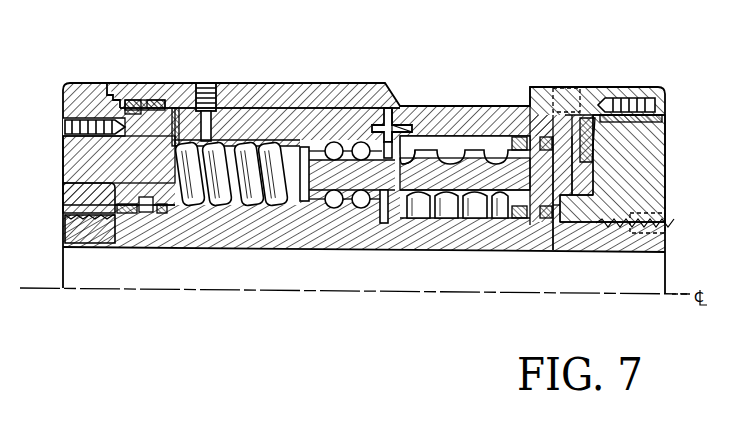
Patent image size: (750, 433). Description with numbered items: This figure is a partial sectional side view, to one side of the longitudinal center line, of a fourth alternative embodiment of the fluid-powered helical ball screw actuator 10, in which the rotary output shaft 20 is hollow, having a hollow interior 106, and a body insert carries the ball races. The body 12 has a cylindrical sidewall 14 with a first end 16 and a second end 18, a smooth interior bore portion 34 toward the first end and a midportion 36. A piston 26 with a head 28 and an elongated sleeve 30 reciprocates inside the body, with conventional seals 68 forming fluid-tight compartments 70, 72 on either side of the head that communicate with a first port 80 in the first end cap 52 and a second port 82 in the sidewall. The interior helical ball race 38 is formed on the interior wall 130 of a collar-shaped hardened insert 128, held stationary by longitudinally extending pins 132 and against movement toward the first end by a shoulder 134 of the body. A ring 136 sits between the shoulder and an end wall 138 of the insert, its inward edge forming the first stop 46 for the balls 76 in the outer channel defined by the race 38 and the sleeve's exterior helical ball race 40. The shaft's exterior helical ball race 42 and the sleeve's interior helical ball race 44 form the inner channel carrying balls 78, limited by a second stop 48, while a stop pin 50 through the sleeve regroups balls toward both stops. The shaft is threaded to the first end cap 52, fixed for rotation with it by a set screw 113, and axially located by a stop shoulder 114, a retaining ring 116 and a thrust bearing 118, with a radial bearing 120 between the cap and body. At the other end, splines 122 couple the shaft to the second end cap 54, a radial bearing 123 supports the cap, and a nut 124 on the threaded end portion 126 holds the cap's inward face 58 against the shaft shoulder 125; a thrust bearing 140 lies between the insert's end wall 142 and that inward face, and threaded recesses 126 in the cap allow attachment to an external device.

The fluid-powered helical ball screw actuator 10 is at (505, 31).
The body 12 is at (352, 83).
The cylindrical sidewall 14 is at (318, 140).
The first end 16 is at (652, 87).
The second end 18 is at (112, 84).
The rotary output shaft 20 is at (302, 202).
The piston 26 is at (535, 106).
The head 28 is at (556, 110).
The sleeve 30 is at (430, 150).
The smooth interior bore portion 34 is at (468, 170).
The midportion 36 is at (240, 141).
The interior helical ball race 38 is at (205, 207).
The exterior helical ball race 40 is at (456, 136).
The exterior helical ball race 42 is at (238, 207).
The interior helical ball race 44 is at (470, 220).
The first stop 46 is at (386, 142).
The second stop 48 is at (384, 224).
The stop pin 50 is at (334, 205).
The first end cap 52 is at (655, 165).
The second end cap 54 is at (72, 152).
The inward face 58 is at (145, 213).
The seals 68 is at (142, 102).
The compartment 70 is at (640, 222).
The compartment 72 is at (520, 137).
The balls 76 is at (283, 140).
The balls 78 is at (360, 208).
The first port 80 is at (596, 98).
The second port 82 is at (204, 84).
The hollow interior 106 is at (70, 272).
The set screw 113 is at (662, 232).
The stop shoulder 114 is at (553, 226).
The retaining ring 116 is at (578, 226).
The thrust bearing 118 is at (575, 170).
The radial bearing 120 is at (660, 116).
The splines 122 is at (125, 214).
The radial bearing 123 is at (152, 100).
The nut 124 is at (78, 197).
The shoulder 125 is at (175, 146).
The end portion / threaded recesses 126 is at (68, 128).
The hardened insert 128 is at (273, 98).
The interior wall 130 is at (212, 140).
The pins 132 is at (410, 125).
The shoulder 134 is at (400, 118).
The ring 136 is at (388, 108).
The end wall 138 is at (340, 108).
The thrust bearing 140 is at (80, 165).
The end wall 142 is at (122, 118).